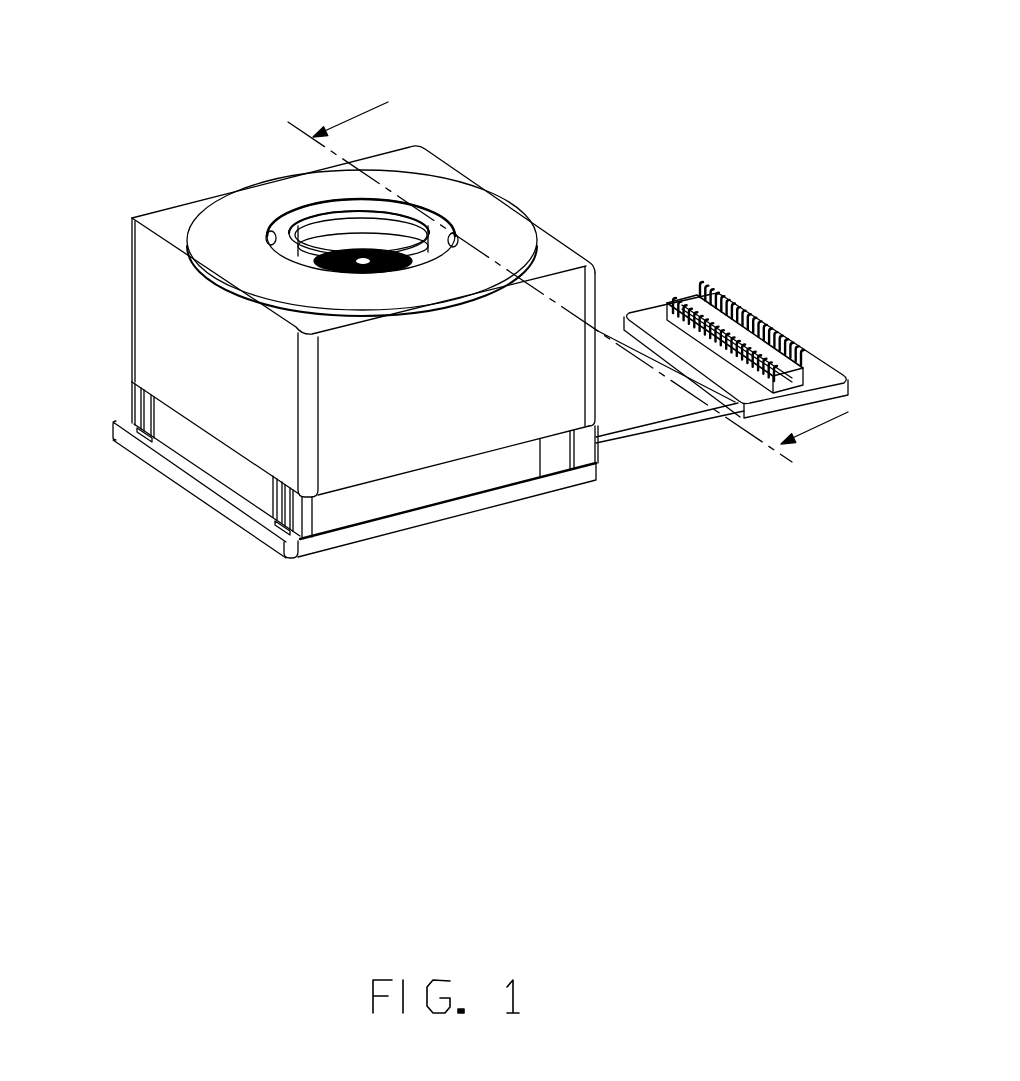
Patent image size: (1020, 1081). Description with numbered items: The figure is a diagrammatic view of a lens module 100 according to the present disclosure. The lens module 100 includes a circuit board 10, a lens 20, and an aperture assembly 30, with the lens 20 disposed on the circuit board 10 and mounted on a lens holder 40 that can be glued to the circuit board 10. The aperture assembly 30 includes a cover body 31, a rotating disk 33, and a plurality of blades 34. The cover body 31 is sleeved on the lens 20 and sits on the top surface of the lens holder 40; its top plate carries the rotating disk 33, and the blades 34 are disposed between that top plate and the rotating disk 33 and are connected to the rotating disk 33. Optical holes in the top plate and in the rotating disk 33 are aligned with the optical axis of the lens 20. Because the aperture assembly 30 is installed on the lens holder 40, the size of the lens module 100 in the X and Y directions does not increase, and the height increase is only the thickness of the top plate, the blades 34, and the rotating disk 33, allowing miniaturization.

The lens module 100 is at (487, 34).
The circuit board 10 is at (322, 542).
The lens 20 is at (365, 238).
The aperture assembly 30 is at (72, 230).
The cover body 31 is at (182, 311).
The rotating disk 33 is at (192, 278).
The blades 34 is at (240, 267).
The lens holder 40 is at (226, 468).